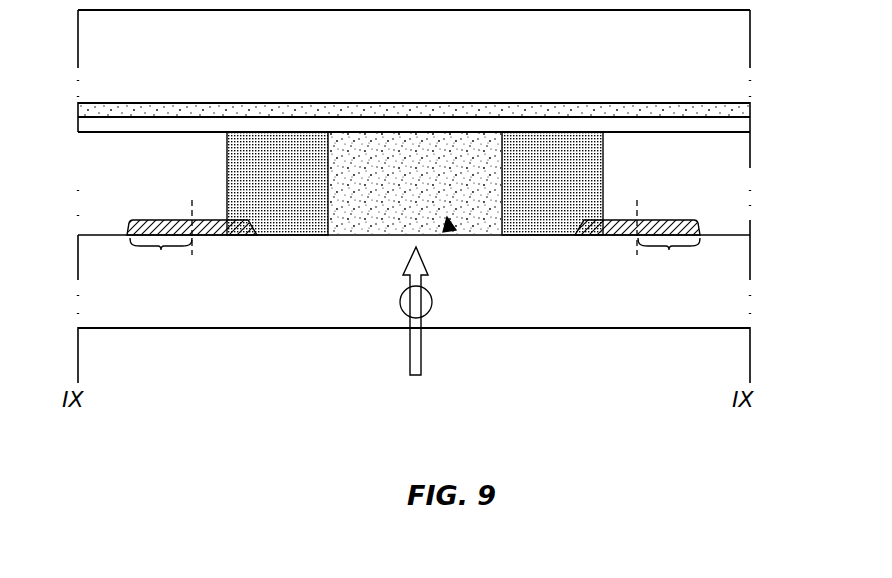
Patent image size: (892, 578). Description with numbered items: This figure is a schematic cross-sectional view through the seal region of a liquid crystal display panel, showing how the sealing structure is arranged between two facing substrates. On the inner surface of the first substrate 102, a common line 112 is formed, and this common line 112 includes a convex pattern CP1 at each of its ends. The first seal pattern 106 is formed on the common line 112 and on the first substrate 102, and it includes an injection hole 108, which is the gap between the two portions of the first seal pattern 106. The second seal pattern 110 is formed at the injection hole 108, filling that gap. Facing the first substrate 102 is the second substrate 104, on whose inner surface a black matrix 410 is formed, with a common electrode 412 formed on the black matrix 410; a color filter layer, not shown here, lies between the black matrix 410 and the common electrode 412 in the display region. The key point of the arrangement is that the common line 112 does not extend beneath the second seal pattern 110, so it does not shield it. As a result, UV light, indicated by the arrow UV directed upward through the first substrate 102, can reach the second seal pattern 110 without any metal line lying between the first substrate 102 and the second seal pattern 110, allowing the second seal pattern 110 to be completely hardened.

The first substrate 102 is at (728, 309).
The second substrate 104 is at (724, 83).
The first seal pattern 106 is at (243, 150).
The injection hole 108 is at (451, 235).
The second seal pattern 110 is at (380, 224).
The common line 112 is at (212, 226).
The black matrix 410 is at (735, 108).
The common electrode 412 is at (717, 127).
The convex pattern CP1 is at (415, 256).
The UV light UV is at (416, 321).